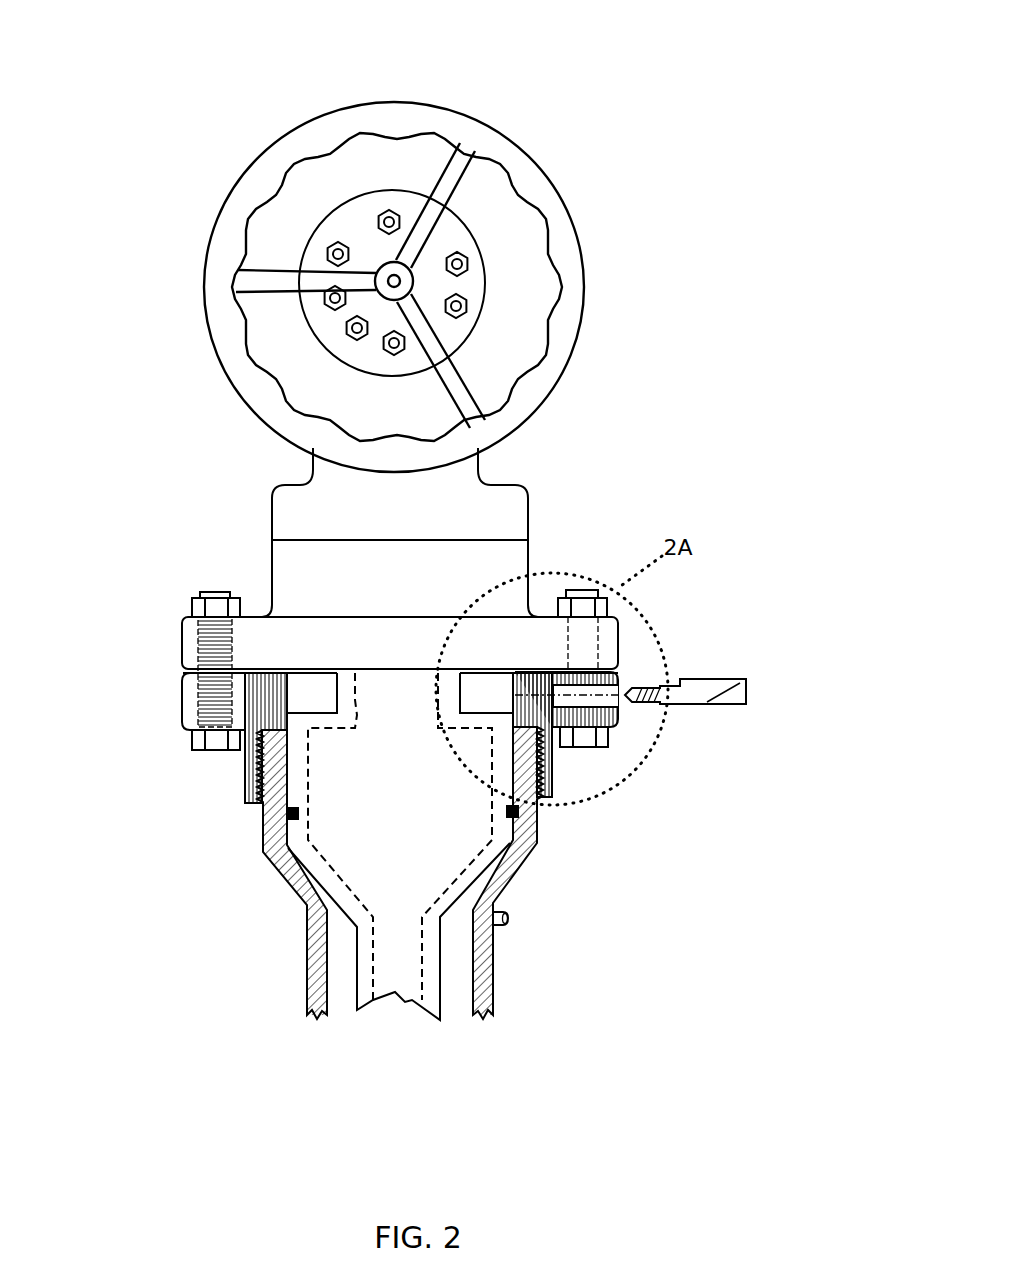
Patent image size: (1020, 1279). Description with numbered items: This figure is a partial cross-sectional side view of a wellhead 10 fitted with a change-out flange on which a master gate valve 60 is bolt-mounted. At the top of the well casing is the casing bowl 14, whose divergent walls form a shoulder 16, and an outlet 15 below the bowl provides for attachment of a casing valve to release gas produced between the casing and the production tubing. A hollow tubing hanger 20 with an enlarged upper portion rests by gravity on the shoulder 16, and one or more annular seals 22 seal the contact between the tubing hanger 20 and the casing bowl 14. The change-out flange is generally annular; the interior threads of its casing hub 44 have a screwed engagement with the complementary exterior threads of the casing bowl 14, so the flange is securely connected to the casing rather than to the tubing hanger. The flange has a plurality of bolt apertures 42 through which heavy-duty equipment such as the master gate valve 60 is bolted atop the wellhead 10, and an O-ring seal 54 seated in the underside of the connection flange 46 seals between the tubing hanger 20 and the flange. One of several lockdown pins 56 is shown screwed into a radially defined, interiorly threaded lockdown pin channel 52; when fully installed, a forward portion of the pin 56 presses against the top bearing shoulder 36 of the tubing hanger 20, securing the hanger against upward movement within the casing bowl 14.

The wellhead 10 is at (580, 78).
The master gate valve 60 is at (502, 600).
The connection flange 46 is at (197, 693).
The bolt apertures 42 is at (183, 698).
The casing hub 44 is at (250, 772).
The annular seals 22 is at (285, 815).
The casing bowl 14 is at (273, 870).
The tubing hanger 20 is at (350, 908).
The shoulder 16 is at (523, 865).
The outlet 15 is at (510, 925).
The lockdown pin channels 52 is at (613, 673).
The O-ring seal 54 is at (543, 708).
The top bearing shoulder 36 is at (610, 730).
The lockdown pins 56 is at (743, 683).